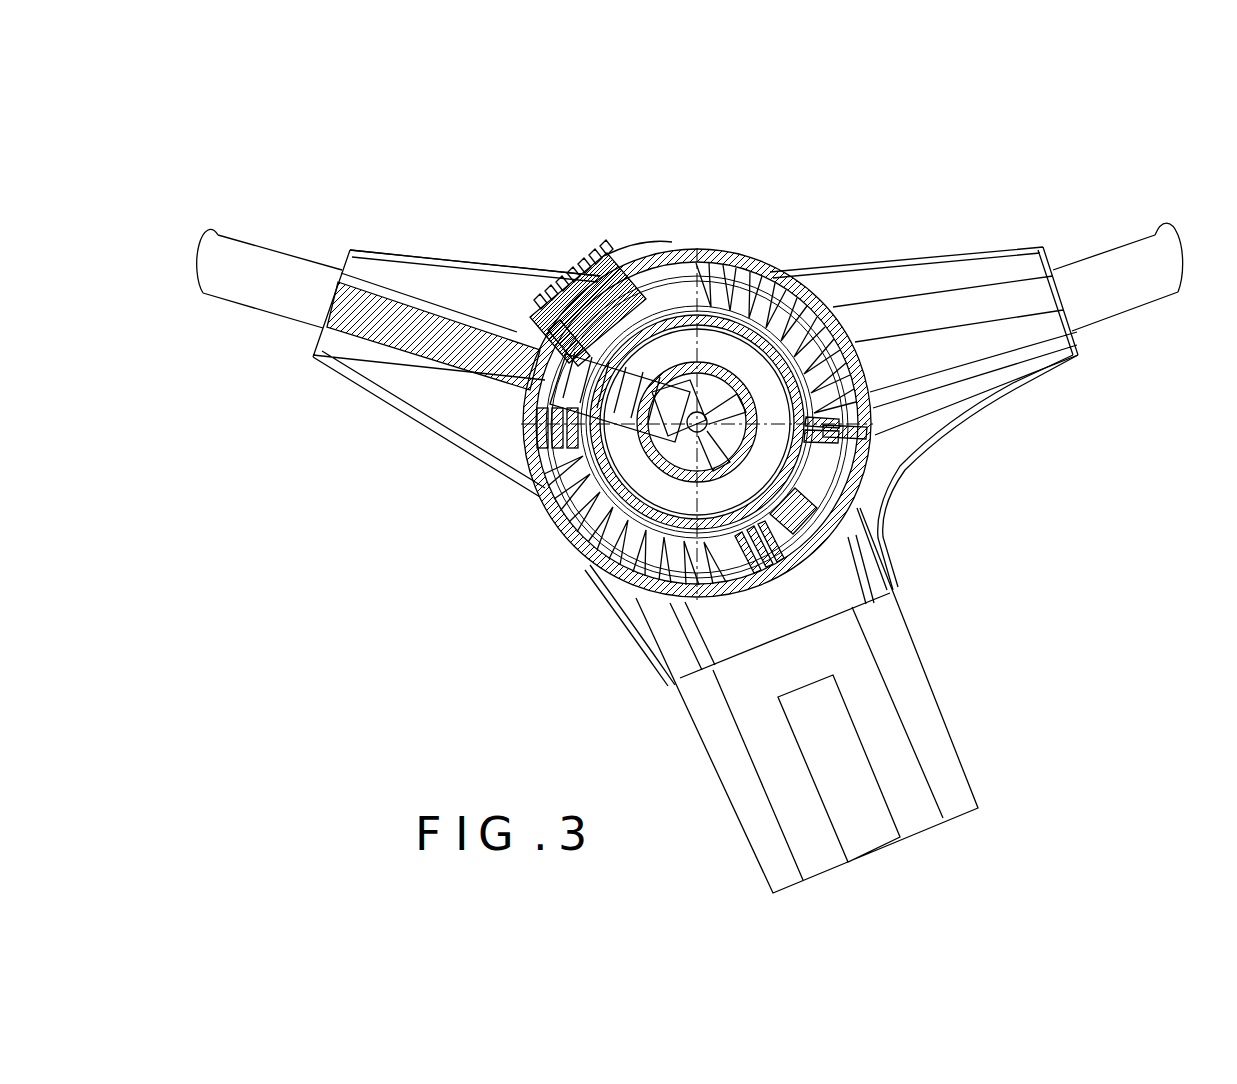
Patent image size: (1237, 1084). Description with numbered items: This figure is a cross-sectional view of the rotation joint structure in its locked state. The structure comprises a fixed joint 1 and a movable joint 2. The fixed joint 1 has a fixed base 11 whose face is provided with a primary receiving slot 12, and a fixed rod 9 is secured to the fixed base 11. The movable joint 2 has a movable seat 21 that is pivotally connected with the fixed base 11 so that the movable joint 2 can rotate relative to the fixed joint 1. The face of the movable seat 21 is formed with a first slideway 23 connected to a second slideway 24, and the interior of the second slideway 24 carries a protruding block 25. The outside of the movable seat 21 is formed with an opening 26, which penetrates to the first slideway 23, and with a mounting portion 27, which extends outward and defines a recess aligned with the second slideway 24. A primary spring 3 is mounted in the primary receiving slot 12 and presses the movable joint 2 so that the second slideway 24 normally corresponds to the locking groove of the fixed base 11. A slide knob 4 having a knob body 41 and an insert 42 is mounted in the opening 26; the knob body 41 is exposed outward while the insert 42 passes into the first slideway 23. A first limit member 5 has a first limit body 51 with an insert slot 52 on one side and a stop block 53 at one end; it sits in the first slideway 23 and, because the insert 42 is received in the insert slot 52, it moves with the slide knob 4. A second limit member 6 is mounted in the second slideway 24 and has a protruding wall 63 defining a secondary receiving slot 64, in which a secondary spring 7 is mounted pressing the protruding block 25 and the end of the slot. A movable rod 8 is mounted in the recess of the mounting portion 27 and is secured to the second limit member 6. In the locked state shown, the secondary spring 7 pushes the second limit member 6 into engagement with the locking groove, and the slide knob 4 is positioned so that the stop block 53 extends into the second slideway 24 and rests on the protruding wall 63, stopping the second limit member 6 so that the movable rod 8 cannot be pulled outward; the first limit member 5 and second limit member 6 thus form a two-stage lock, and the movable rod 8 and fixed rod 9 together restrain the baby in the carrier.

The fixed joint 1 is at (700, 497).
The fixed base 11 is at (870, 505).
The primary receiving slot 12 is at (833, 312).
The movable joint 2 is at (683, 700).
The movable seat 21 is at (597, 560).
The first slideway 23 is at (715, 270).
The second slideway 24 is at (547, 377).
The protruding block 25 is at (572, 395).
The opening 26 is at (630, 258).
The mounting portion 27 is at (350, 250).
The primary spring 3 is at (790, 270).
The slide knob 4 is at (700, 344).
The knob body 41 is at (600, 262).
The insert 42 is at (677, 258).
The first limit member 5 is at (509, 234).
The first limit body 51 is at (554, 262).
The insert slot 52 is at (514, 262).
The stop block 53 is at (487, 262).
The second limit member 6 is at (485, 392).
The protruding wall 63 is at (555, 442).
The secondary receiving slot 64 is at (532, 482).
The secondary spring 7 is at (562, 485).
The movable rod 8 is at (268, 296).
The fixed rod 9 is at (1143, 297).